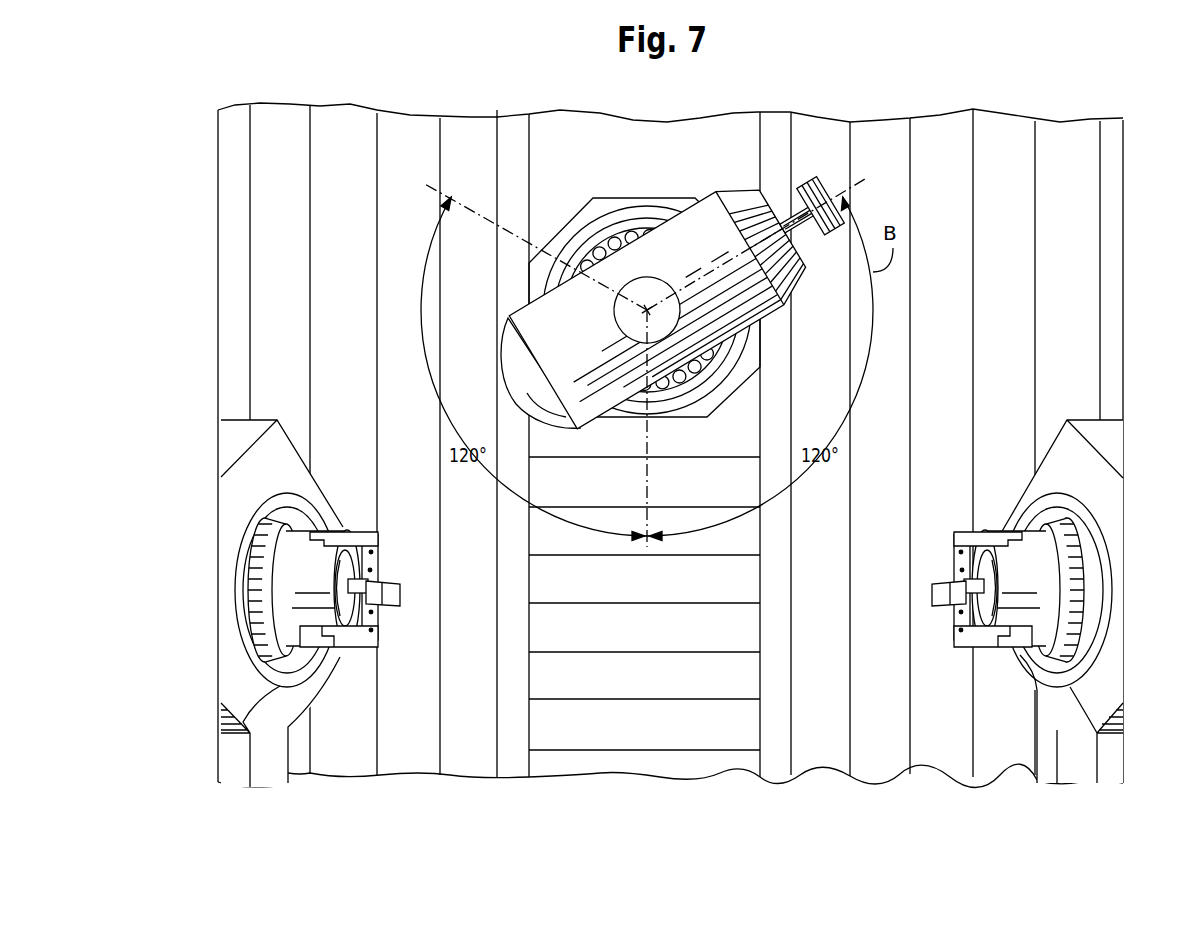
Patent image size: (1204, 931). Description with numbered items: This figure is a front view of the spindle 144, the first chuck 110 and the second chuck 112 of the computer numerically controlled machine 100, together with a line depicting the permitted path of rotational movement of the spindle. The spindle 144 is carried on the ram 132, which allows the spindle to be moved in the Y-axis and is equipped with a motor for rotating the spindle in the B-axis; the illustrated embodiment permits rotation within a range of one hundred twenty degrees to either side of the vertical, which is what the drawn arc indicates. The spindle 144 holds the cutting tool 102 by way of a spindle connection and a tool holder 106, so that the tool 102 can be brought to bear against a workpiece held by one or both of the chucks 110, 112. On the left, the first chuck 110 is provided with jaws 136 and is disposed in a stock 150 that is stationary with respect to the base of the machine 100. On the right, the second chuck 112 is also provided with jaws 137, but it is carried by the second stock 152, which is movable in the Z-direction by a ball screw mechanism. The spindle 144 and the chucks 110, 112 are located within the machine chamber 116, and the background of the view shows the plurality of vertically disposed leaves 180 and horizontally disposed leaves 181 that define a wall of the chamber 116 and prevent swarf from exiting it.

The computer numerically controlled machine 100 is at (263, 86).
The cutting tool 102 is at (818, 177).
The tool holder 106 is at (787, 207).
The first chuck 110 is at (297, 517).
The second chuck 112 is at (1067, 572).
The machine chamber 116 is at (650, 683).
The ram 132 is at (580, 250).
The jaws 136 is at (380, 533).
The jaws 137 is at (1012, 571).
The spindle 144 is at (660, 250).
The stock 150 is at (245, 505).
The second stock 152 is at (1110, 663).
The vertically disposed leaves 180 is at (830, 768).
The horizontal disposed leaves 181 is at (753, 623).